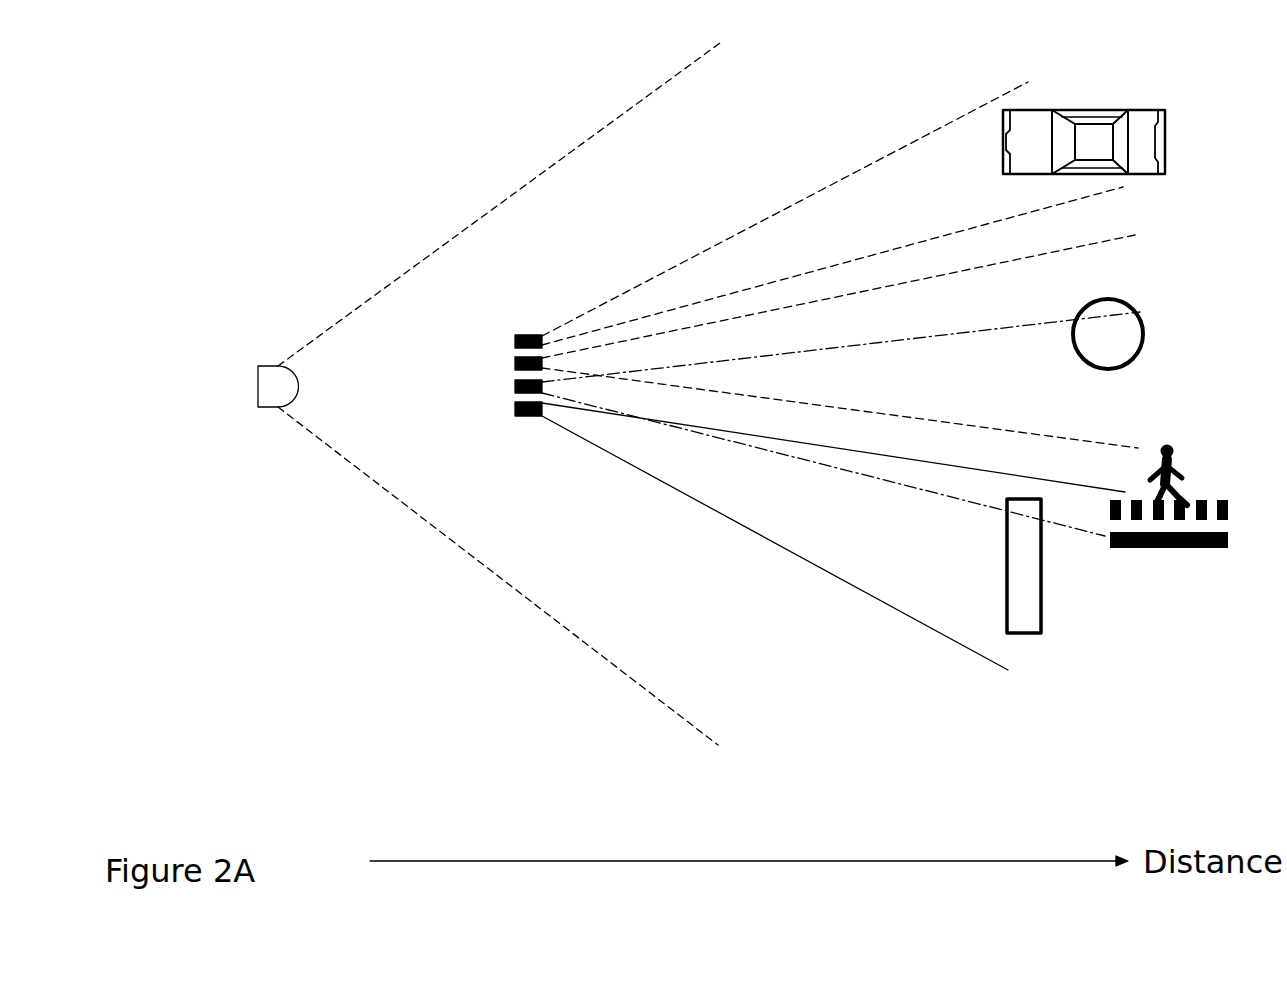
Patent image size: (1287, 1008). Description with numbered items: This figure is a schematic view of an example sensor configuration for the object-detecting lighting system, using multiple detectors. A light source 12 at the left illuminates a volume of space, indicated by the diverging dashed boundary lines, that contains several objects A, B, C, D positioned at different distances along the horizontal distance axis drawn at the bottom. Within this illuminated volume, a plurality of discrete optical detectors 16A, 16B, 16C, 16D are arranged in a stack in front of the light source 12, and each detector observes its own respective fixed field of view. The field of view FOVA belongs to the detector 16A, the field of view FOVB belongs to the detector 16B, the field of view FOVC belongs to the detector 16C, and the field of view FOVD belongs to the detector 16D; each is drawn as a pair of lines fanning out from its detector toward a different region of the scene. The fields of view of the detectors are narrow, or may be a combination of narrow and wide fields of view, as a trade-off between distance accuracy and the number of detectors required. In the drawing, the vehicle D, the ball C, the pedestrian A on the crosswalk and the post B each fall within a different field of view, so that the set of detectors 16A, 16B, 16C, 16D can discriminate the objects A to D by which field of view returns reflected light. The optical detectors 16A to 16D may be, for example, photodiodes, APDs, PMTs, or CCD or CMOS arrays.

The light source 12 is at (256, 385).
The optical detector 16A is at (514, 341).
The optical detector 16B is at (514, 363).
The optical detector 16C is at (514, 387).
The optical detector 16D is at (514, 408).
The field of view FOVA is at (798, 200).
The field of view FOVB is at (1068, 268).
The field of view FOVC is at (953, 497).
The field of view FOVD is at (860, 587).
The object A is at (1187, 480).
The object B is at (1043, 568).
The object C is at (1143, 337).
The object D is at (1165, 143).